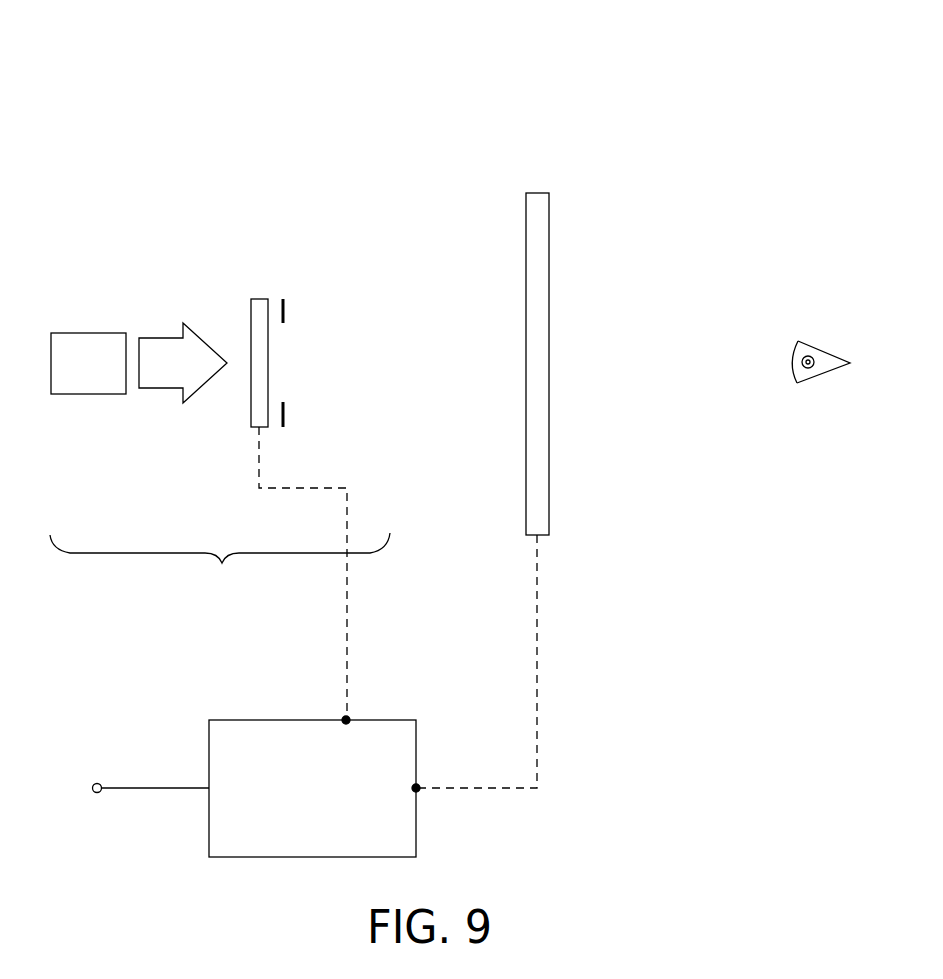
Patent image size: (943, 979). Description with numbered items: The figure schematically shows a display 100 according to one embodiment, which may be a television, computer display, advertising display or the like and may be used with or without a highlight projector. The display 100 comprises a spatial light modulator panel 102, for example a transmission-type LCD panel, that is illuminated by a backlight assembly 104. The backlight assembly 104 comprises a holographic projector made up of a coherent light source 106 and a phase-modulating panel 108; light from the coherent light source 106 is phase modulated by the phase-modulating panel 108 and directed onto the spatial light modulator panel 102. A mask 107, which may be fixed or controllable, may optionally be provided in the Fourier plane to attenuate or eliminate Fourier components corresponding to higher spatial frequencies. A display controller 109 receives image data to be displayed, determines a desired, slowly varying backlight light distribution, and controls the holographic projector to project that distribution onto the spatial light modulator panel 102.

The display 100 is at (118, 58).
The spatial light modulator panel 102 is at (537, 192).
The backlight assembly 104 is at (220, 564).
The coherent light source 106 is at (78, 333).
The mask 107 is at (285, 292).
The phase-modulating panel 108 is at (259, 297).
The display controller 109 is at (272, 720).